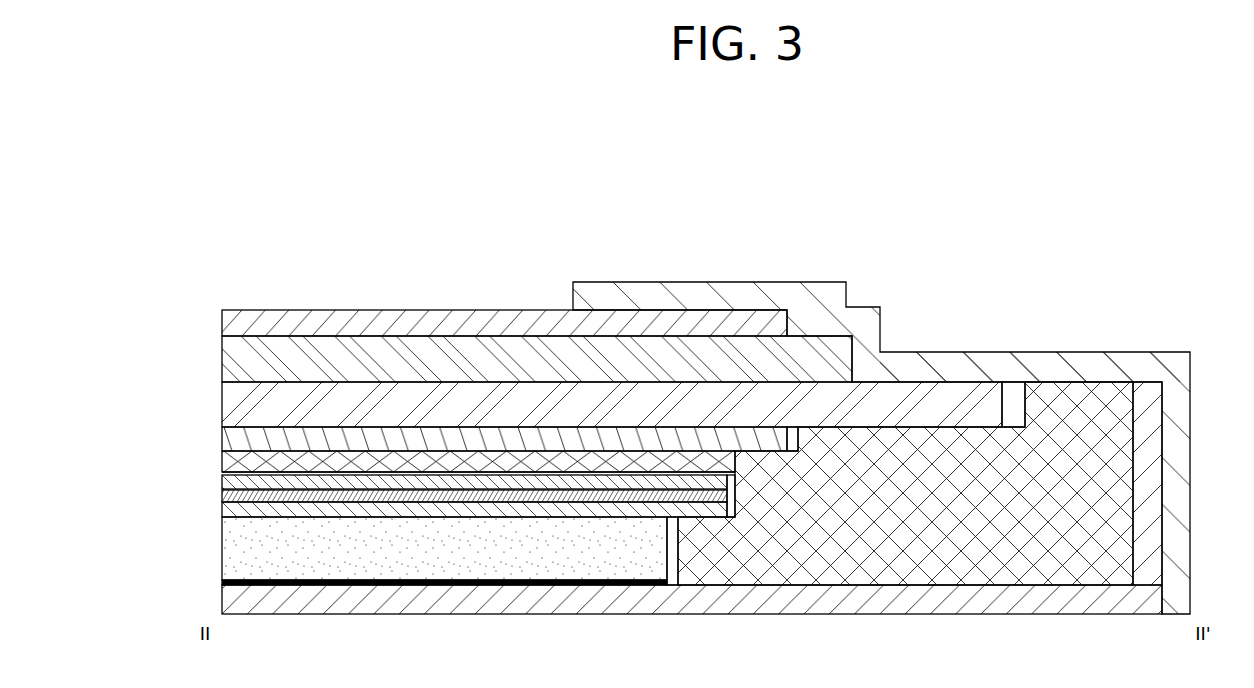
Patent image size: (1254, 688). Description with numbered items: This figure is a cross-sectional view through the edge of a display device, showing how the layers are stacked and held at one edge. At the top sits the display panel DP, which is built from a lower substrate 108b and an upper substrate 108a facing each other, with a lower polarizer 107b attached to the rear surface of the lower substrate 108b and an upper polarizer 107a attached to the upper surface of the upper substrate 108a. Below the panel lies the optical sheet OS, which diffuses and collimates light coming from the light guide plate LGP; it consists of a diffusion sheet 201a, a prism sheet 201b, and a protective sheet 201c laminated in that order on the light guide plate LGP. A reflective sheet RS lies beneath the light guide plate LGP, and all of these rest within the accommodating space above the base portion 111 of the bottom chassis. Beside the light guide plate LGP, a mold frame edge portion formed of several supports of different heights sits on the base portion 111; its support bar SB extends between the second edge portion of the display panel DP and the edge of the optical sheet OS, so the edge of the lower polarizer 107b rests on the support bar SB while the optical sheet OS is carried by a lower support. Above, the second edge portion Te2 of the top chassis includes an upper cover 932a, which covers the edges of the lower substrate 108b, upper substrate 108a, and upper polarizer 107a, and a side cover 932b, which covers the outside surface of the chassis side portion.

The display panel DP is at (253, 212).
The upper polarizer 107a is at (258, 322).
The upper substrate 108a is at (319, 353).
The lower substrate 108b is at (388, 400).
The lower polarizer 107b is at (456, 443).
The optical sheet OS is at (128, 462).
The protective sheet 201c is at (233, 481).
The prism sheet 201b is at (229, 497).
The diffusion sheet 201a is at (240, 512).
The light guide plate LGP is at (243, 549).
The reflective sheet RS is at (372, 586).
The base portion 111 is at (470, 600).
The support bar SB is at (553, 463).
The second edge portion of the top chassis Te2 is at (1087, 270).
The upper cover 932a is at (1090, 370).
The side cover 932b is at (1178, 428).